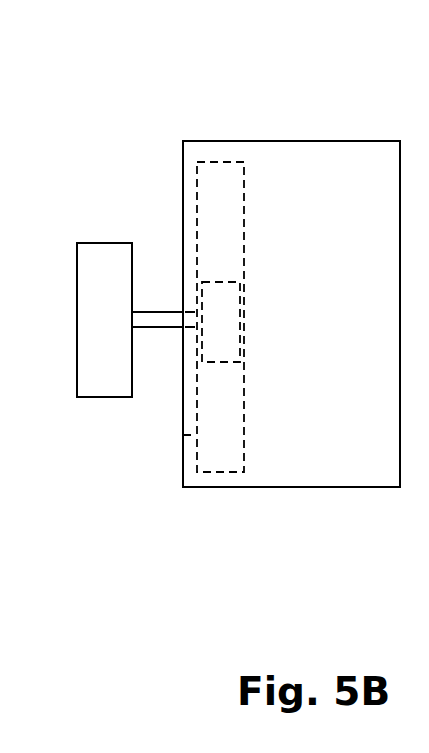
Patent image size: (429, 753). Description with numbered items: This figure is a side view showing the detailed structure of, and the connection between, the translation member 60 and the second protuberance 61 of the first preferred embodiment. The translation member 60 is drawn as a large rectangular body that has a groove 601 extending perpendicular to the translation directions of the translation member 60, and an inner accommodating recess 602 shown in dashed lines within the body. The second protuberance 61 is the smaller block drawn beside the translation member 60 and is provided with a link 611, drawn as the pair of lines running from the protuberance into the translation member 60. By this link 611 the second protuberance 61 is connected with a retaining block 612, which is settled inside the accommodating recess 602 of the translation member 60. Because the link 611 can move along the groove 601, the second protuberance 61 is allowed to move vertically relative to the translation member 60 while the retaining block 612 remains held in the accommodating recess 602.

The translation member 60 is at (347, 141).
The groove 601 is at (193, 193).
The accommodating recess 602 is at (222, 162).
The retaining block 612 is at (220, 282).
The second protuberance 61 is at (77, 292).
The link 611 is at (150, 328).